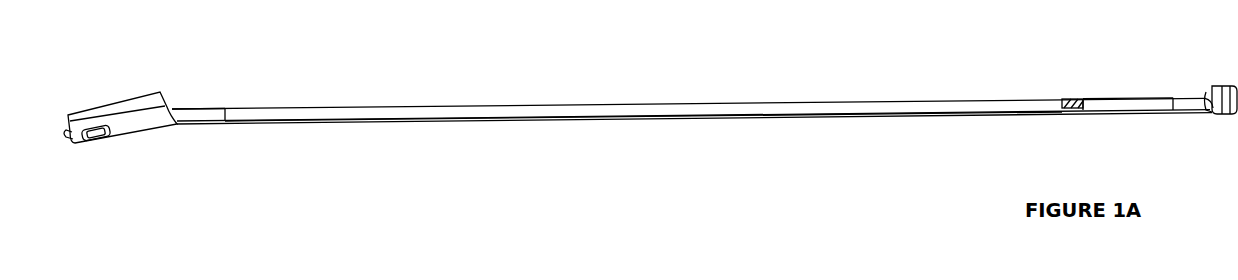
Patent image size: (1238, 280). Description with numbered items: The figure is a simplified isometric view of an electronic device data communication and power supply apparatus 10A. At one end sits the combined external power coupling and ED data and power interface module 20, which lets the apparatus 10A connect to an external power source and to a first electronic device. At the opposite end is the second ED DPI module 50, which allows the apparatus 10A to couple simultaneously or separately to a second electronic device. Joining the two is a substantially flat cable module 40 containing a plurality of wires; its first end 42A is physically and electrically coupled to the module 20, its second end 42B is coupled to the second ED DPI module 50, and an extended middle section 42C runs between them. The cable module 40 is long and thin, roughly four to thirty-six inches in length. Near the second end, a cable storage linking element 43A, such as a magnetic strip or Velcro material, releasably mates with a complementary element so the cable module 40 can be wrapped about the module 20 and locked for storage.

The data communication and power supply apparatus 10A is at (650, 118).
The combined external power coupling and ED data and power interface module 20 is at (142, 122).
The substantially flat cable module 40 is at (653, 110).
The first end 42A is at (266, 112).
The second end 42B is at (1153, 102).
The extended middle section 42C is at (540, 120).
The cable storage linking element 43A is at (1068, 98).
The second ED DPI module 50 is at (1218, 84).